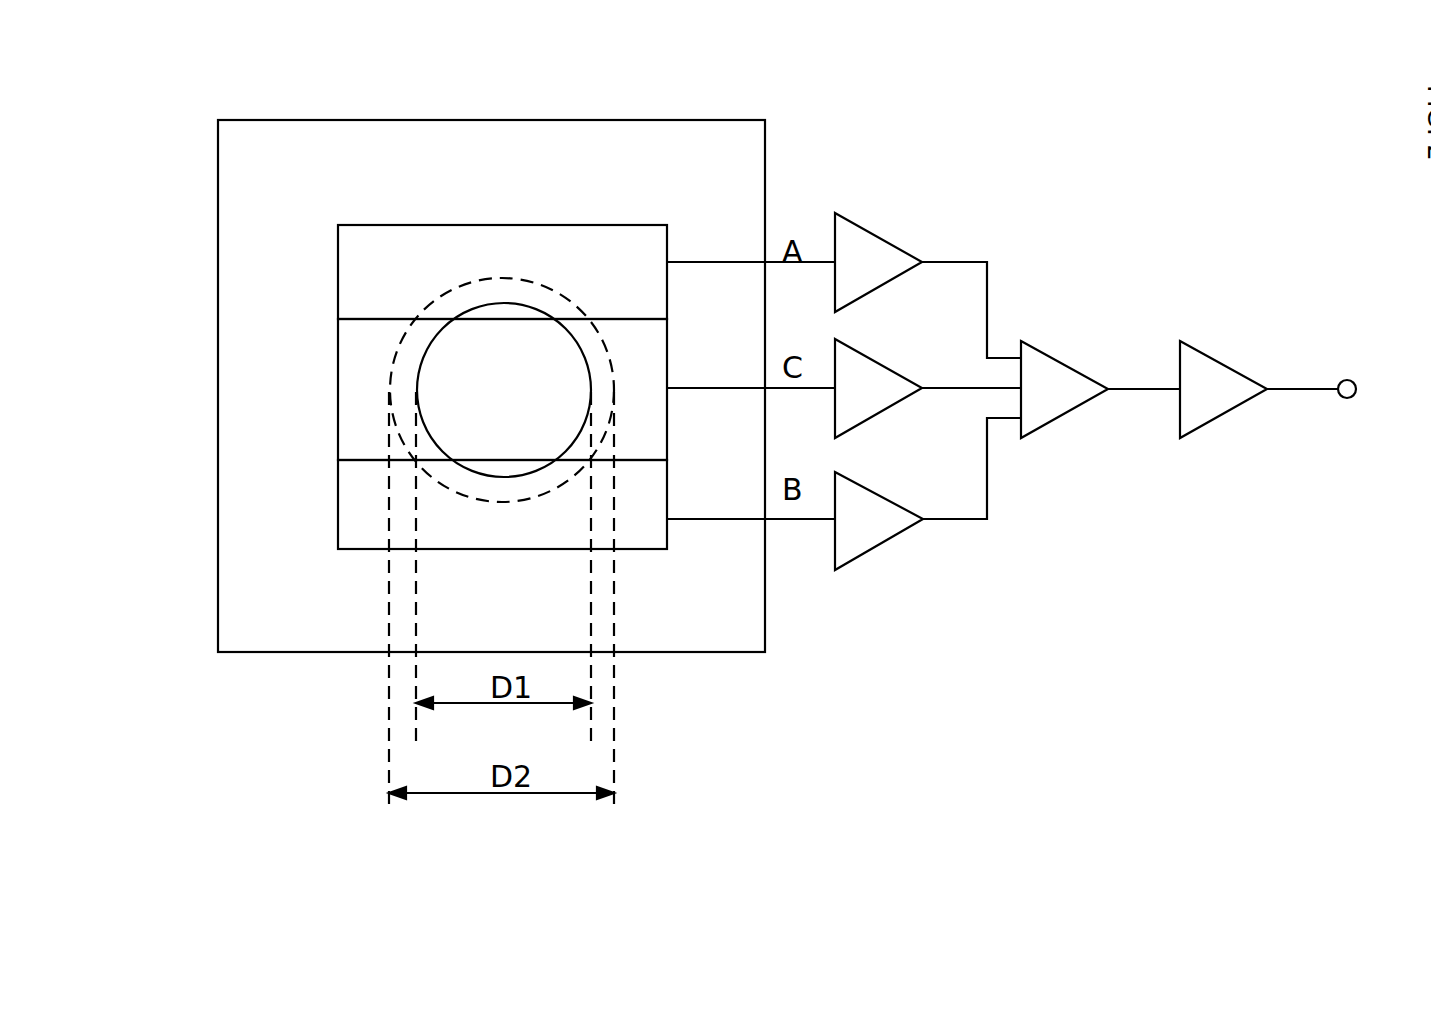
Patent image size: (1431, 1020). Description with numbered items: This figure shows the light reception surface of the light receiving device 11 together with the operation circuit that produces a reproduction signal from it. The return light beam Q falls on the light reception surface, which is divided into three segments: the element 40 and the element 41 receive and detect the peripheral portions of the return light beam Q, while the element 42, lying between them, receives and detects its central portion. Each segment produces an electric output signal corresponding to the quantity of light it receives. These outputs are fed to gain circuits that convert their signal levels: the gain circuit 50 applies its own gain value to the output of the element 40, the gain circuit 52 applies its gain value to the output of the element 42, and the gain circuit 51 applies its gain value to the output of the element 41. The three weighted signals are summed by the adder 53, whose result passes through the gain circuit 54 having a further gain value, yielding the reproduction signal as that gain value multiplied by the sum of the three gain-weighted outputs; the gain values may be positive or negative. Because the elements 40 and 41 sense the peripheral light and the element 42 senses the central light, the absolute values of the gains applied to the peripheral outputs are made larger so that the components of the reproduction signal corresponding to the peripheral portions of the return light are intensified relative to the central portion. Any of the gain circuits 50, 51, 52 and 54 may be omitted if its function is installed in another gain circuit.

The light receiving device 11 is at (218, 387).
The element 40 is at (360, 281).
The element 42 is at (360, 390).
The element 41 is at (363, 518).
The return light beam Q is at (504, 280).
The gain circuit 50 is at (858, 224).
The gain circuit 51 is at (858, 480).
The gain circuit 52 is at (858, 350).
The adder 53 is at (1052, 359).
The gain circuit 54 is at (1212, 359).